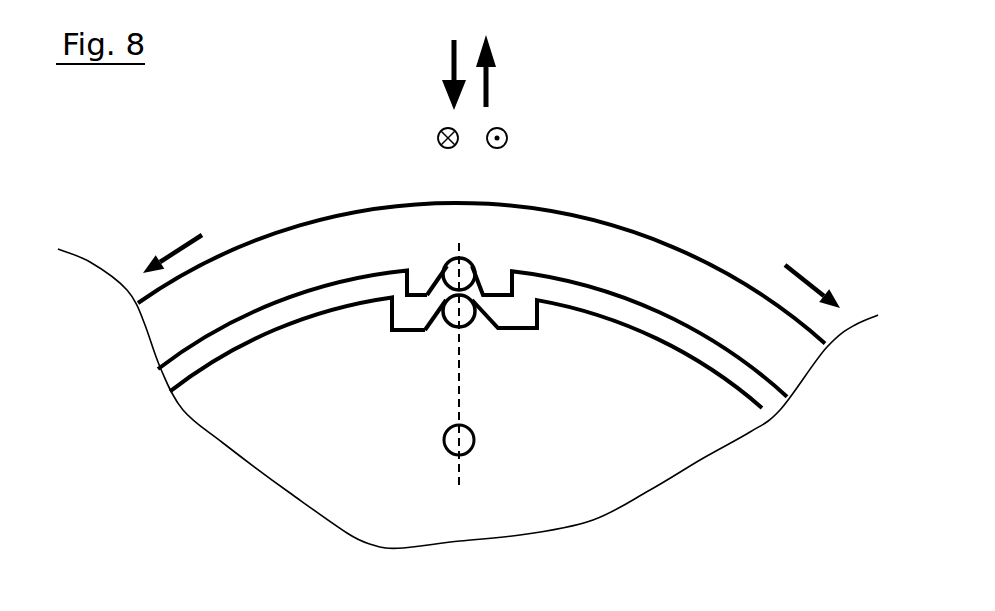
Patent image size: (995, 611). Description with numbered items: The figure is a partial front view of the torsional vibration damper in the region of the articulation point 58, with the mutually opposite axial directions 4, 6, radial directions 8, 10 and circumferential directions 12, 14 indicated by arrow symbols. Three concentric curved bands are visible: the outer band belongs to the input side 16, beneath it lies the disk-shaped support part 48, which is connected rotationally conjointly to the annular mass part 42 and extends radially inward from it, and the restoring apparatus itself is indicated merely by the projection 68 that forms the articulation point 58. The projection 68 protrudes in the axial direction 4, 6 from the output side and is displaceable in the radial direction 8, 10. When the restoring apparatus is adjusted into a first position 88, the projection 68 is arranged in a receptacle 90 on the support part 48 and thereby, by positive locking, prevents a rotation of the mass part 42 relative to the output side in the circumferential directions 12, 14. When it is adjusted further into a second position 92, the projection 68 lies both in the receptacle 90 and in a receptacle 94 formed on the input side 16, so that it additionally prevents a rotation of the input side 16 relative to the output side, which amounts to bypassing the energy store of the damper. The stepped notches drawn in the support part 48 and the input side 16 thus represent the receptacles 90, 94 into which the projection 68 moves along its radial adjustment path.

The axial direction 4 is at (506, 133).
The axial direction 6 is at (438, 136).
The radial direction 8 is at (489, 82).
The radial direction 10 is at (450, 63).
The circumferential direction 12 is at (183, 250).
The circumferential direction 14 is at (800, 272).
The input side 16 is at (658, 258).
The mass part 42 is at (472, 321).
The support part 48 is at (472, 321).
The articulation point 58 is at (459, 440).
The projection 68 is at (440, 467).
The first position 88 is at (433, 340).
The receptacle 90 is at (466, 414).
The second position 92 is at (432, 296).
The receptacle 94 is at (480, 293).